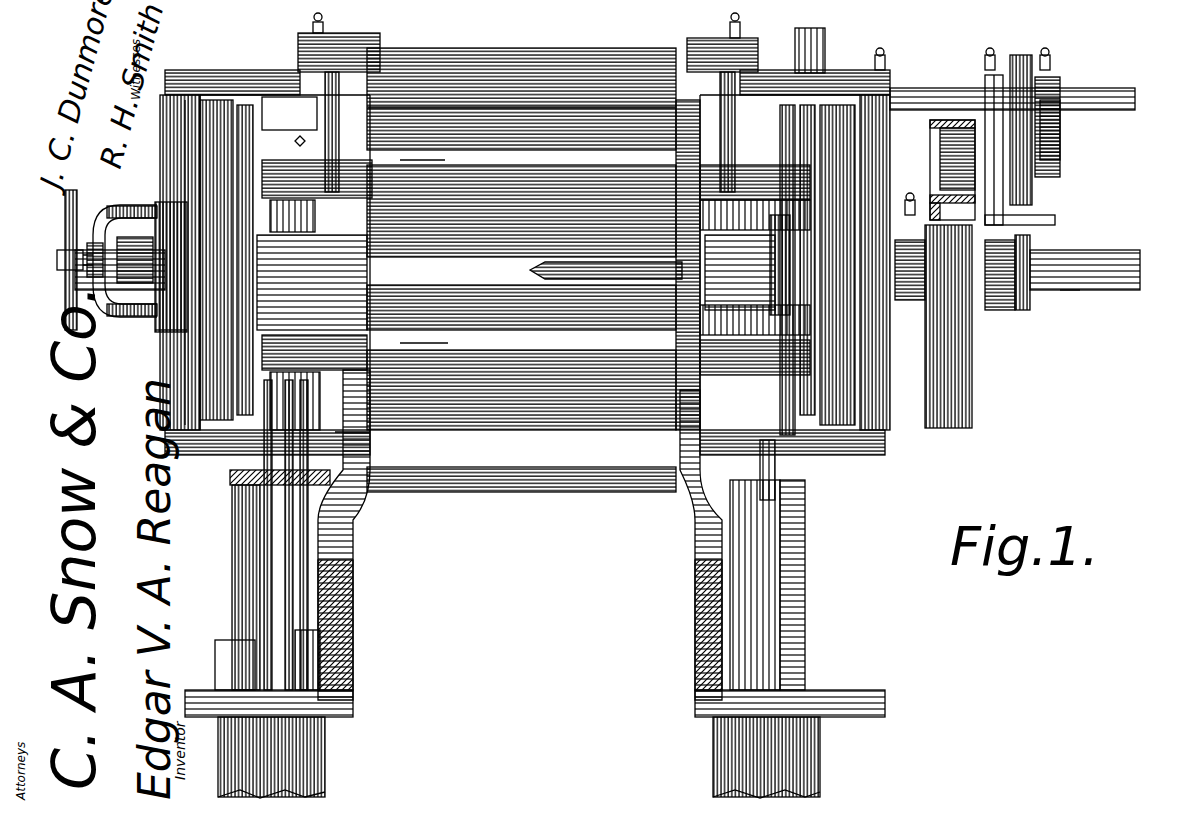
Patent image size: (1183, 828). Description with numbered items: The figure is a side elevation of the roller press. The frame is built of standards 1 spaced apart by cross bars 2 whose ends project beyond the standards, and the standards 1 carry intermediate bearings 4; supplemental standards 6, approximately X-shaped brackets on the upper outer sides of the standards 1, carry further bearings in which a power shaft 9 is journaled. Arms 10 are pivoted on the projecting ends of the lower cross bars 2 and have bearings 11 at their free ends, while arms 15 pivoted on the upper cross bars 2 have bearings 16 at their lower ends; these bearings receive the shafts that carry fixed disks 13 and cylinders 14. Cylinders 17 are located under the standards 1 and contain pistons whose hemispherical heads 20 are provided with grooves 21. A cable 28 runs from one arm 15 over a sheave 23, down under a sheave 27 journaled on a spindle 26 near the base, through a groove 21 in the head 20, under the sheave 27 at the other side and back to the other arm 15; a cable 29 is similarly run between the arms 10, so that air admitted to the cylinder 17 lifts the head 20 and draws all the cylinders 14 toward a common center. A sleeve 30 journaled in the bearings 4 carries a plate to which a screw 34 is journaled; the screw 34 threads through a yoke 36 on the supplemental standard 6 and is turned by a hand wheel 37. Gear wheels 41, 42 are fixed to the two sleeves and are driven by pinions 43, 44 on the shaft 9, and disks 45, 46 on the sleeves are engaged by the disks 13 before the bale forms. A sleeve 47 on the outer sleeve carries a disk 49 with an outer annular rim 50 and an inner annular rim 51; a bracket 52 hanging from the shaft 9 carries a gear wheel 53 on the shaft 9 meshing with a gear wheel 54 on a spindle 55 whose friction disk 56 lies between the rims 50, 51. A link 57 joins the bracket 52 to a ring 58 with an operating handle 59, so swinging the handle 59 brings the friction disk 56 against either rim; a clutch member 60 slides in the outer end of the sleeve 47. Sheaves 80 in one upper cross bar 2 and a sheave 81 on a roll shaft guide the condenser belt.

The standards 1 is at (355, 612).
The cross bars 2 is at (640, 56).
The bearings 4 is at (769, 408).
The supplemental standards 6 is at (885, 442).
The power shaft 9 is at (925, 88).
The arms 10 is at (335, 432).
The bearings 11 is at (441, 341).
The disks 13 is at (250, 105).
The cylinders 14 is at (560, 168).
The arms 15 is at (345, 75).
The bearings 16 is at (440, 159).
The cylinders 17 is at (328, 722).
The hemispherical heads 20 is at (235, 478).
The grooves 21 is at (795, 500).
The sheaves 23 is at (280, 160).
The spindles 26 is at (312, 640).
The sheaves 27 is at (268, 612).
The cable 28 is at (266, 535).
The cable 29 is at (292, 565).
The sleeve 30 is at (470, 263).
The screw 34 is at (62, 295).
The yoke 36 is at (120, 317).
The hand wheel 37 is at (85, 328).
The gear wheel 41 is at (840, 430).
The gear wheel 42 is at (200, 178).
The pinion 43 is at (838, 105).
The pinion 44 is at (215, 100).
The disk 45 is at (820, 285).
The disk 46 is at (168, 330).
The sleeve 47 is at (1025, 312).
The disk 49 is at (975, 405).
The outer annular rim 50 is at (932, 125).
The inner annular rim 51 is at (935, 200).
The bracket 52 is at (1062, 125).
The gear wheel 53 is at (1025, 55).
The gear wheel 54 is at (1005, 195).
The spindle 55 is at (1062, 160).
The friction disk 56 is at (955, 128).
The link 57 is at (1055, 218).
The ring 58 is at (1000, 312).
The operating handle 59 is at (1105, 256).
The clutch member 60 is at (1080, 290).
The sheaves 80 is at (728, 30).
The sheave 81 is at (810, 105).